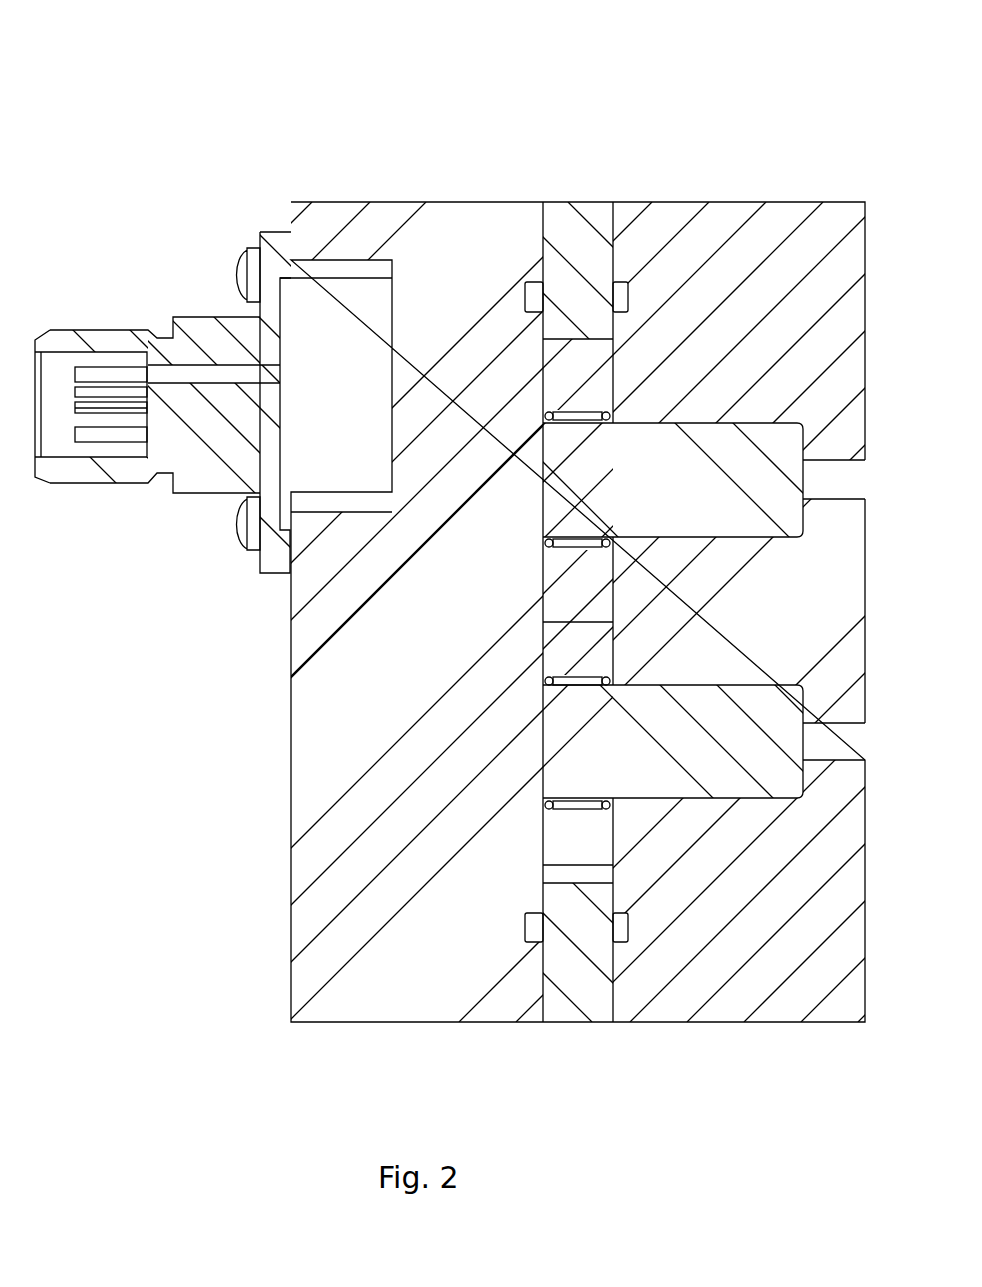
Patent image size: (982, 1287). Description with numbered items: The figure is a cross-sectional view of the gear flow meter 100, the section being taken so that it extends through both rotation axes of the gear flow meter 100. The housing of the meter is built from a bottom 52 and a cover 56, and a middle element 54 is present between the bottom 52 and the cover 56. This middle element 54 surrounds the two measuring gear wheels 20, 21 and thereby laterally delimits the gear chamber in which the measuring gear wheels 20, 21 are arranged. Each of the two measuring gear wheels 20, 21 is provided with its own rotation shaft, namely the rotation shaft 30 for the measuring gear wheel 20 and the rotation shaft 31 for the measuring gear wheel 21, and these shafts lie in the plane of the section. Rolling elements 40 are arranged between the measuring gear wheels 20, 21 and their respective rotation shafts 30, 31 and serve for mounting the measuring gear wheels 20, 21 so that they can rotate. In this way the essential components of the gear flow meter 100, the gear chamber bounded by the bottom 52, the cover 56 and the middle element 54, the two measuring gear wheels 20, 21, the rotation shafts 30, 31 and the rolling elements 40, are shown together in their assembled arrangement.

The gear flow meter 100 is at (617, 72).
The cover 56 is at (396, 190).
The middle element 54 is at (577, 190).
The bottom 52 is at (744, 190).
The measuring gear wheel 20 is at (584, 386).
The measuring gear wheel 21 is at (592, 656).
The rotation shaft 30 is at (658, 481).
The rotation shaft 31 is at (695, 754).
The rolling elements 40 is at (545, 415).